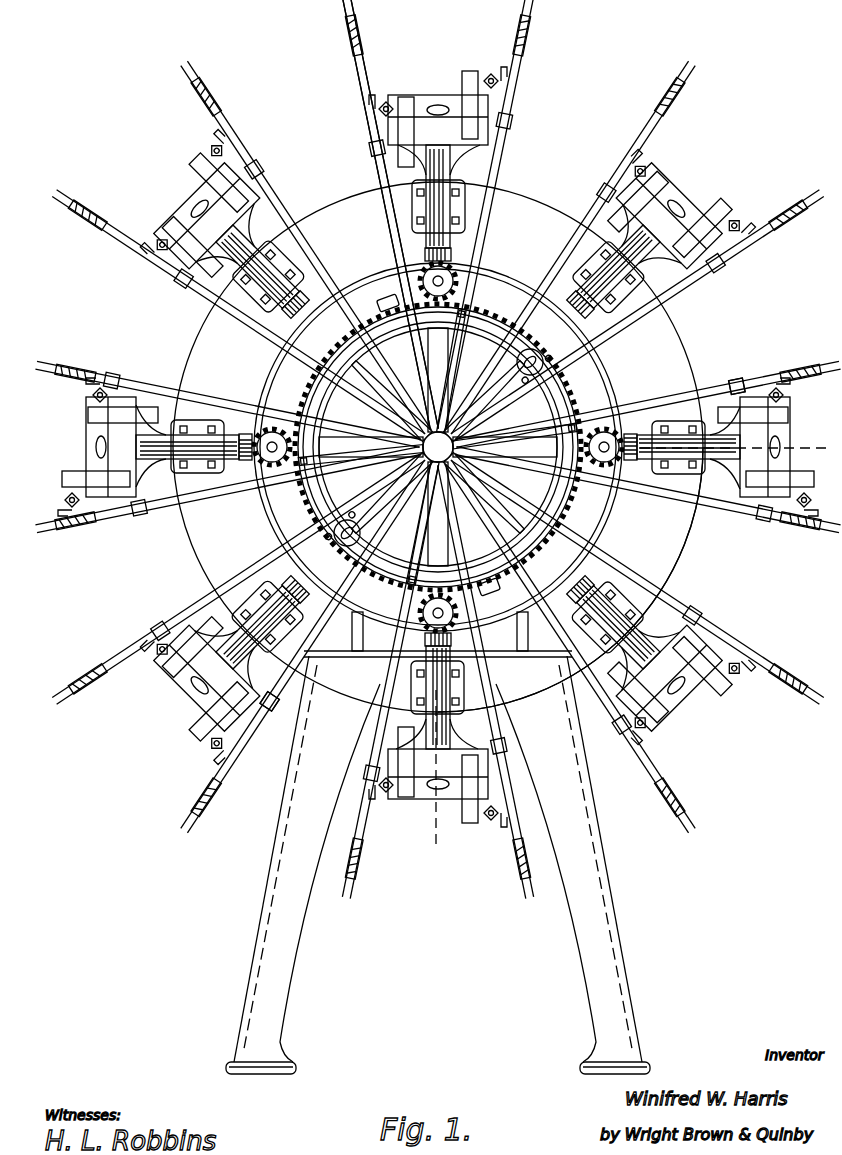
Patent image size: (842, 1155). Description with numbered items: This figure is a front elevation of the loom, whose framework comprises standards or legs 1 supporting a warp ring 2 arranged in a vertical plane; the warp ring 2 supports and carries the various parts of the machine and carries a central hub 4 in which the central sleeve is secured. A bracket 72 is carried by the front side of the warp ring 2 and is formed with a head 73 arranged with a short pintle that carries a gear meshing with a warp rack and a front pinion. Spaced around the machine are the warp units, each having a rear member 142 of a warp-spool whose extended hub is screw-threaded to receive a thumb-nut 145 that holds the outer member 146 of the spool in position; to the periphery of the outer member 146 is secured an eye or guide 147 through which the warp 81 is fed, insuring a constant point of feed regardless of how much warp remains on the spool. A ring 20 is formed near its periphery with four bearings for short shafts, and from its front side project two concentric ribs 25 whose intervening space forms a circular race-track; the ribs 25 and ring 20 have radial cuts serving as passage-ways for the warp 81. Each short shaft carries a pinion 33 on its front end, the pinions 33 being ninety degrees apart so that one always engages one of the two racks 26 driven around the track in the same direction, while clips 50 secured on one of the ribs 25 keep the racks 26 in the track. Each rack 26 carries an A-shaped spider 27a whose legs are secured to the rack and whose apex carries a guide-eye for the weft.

The standards or legs 1 is at (577, 941).
The warp ring 2 is at (548, 206).
The central hub 4 is at (632, 655).
The ring 20 is at (272, 521).
The concentric ribs 25 is at (323, 400).
The racks 26 is at (488, 305).
The spider 27a is at (498, 316).
The pinion 33 is at (612, 413).
The clips 50 is at (385, 302).
The bracket 72 is at (287, 262).
The head 73 is at (698, 463).
The warp 81 is at (660, 565).
The rear member of warp-spool 142 is at (356, 14).
The thumb-nut 145 is at (632, 137).
The outer member of the spool 146 is at (352, 38).
The eye or guide 147 is at (730, 373).